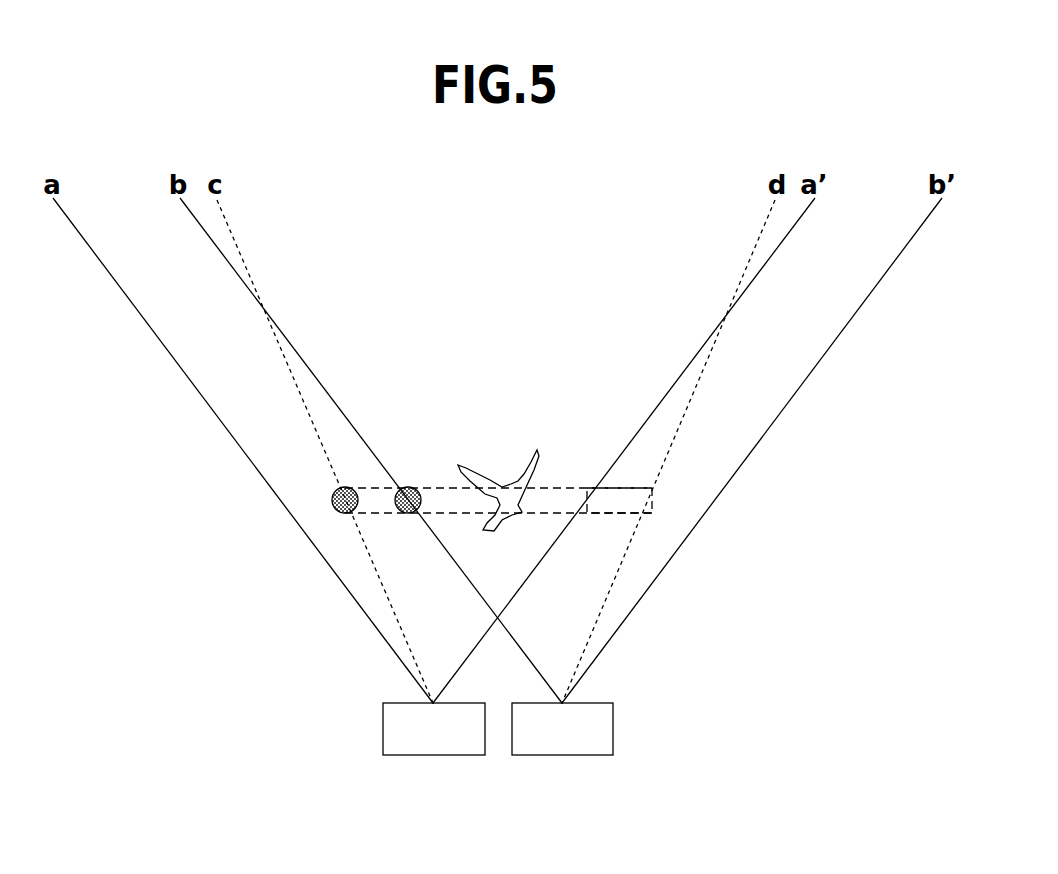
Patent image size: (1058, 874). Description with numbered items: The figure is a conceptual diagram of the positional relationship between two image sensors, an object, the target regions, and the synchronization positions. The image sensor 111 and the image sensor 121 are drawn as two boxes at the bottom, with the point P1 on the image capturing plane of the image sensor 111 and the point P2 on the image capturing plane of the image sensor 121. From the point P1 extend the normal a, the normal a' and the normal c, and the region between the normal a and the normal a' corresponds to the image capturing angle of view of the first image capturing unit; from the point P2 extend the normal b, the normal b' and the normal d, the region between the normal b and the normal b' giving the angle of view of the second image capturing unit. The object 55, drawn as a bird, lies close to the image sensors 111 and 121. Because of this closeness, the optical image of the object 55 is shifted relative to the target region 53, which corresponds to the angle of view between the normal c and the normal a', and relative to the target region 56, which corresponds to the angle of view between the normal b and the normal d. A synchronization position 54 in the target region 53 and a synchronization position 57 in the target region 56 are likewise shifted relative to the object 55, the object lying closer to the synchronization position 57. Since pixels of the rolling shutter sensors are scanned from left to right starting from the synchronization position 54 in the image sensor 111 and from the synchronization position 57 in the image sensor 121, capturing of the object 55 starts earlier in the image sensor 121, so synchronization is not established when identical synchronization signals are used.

The target region 53 is at (372, 488).
The synchronization position 54 is at (345, 513).
The object 55 is at (531, 471).
The target region 56 is at (635, 488).
The synchronization position 57 is at (408, 513).
The image sensor 111 is at (431, 755).
The image sensor 121 is at (560, 755).
The point p1 P1 is at (433, 704).
The point p2 P2 is at (562, 704).